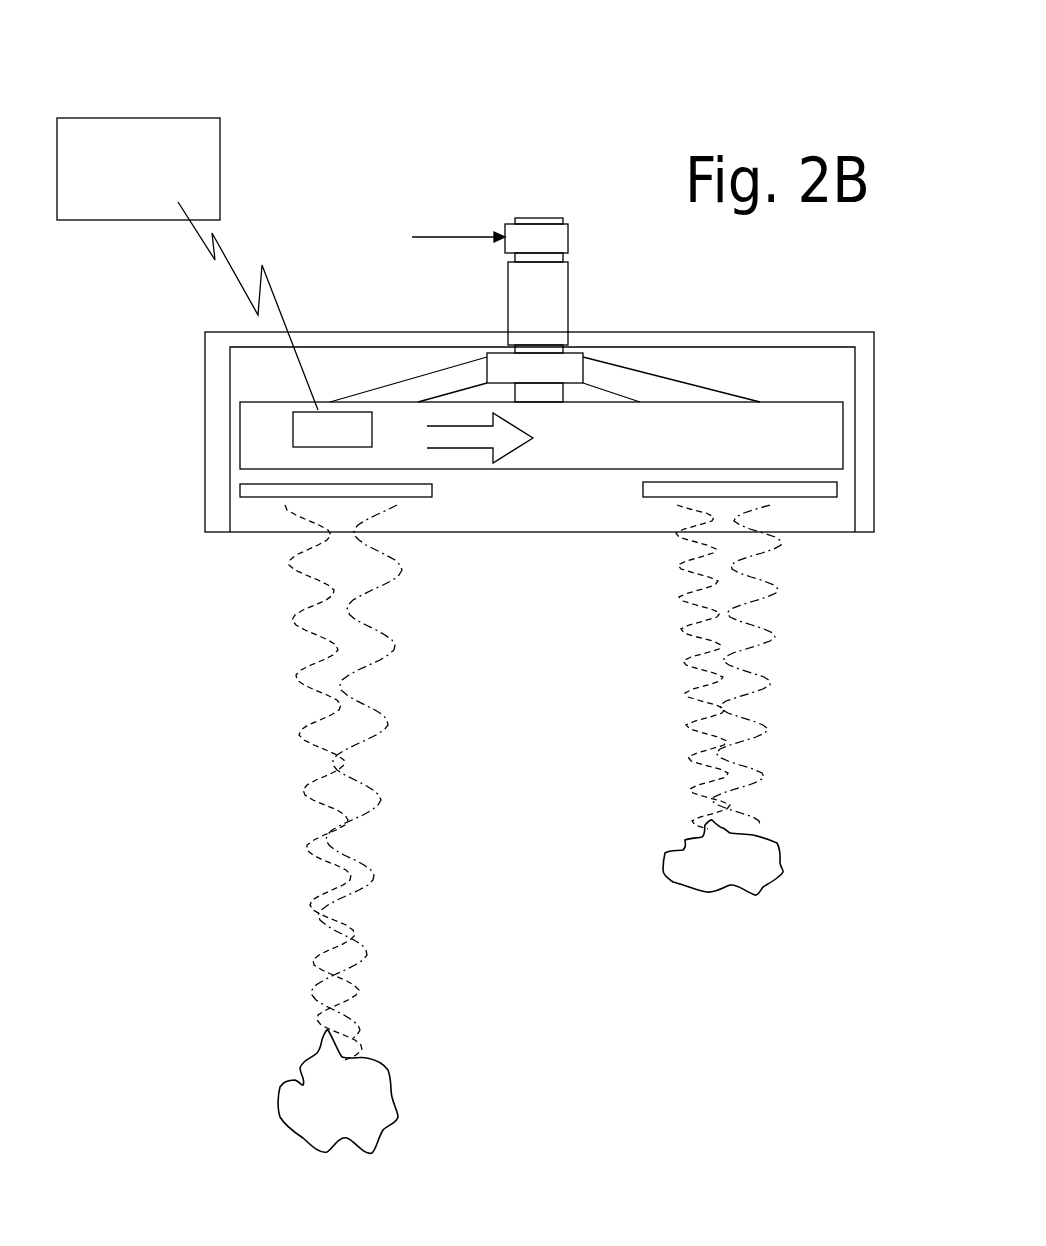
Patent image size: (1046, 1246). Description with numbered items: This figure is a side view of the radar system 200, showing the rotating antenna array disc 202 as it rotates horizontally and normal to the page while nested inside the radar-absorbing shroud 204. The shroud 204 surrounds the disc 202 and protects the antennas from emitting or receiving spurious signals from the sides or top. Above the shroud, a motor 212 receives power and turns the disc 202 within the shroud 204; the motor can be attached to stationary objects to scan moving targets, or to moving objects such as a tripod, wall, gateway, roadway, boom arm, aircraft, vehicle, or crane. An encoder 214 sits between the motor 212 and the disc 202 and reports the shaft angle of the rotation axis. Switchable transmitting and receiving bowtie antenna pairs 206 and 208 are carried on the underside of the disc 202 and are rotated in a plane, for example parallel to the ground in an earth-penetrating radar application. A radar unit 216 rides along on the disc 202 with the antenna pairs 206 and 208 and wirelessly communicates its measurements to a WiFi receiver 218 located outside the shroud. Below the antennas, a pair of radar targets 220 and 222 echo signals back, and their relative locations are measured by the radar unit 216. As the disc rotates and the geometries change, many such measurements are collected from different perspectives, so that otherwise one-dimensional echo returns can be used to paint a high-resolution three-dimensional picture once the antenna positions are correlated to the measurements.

The radar system 200 is at (372, 16).
The rotating antenna array disc 202 is at (837, 415).
The radar-absorbing shroud 204 is at (202, 472).
The bowtie antenna pair 206 is at (432, 487).
The bowtie antenna pair 208 is at (643, 485).
The motor 212 is at (567, 273).
The encoder 214 is at (573, 365).
The radar unit 216 is at (353, 429).
The WiFi receiver 218 is at (217, 182).
The radar target 220 is at (368, 1070).
The radar target 222 is at (663, 867).